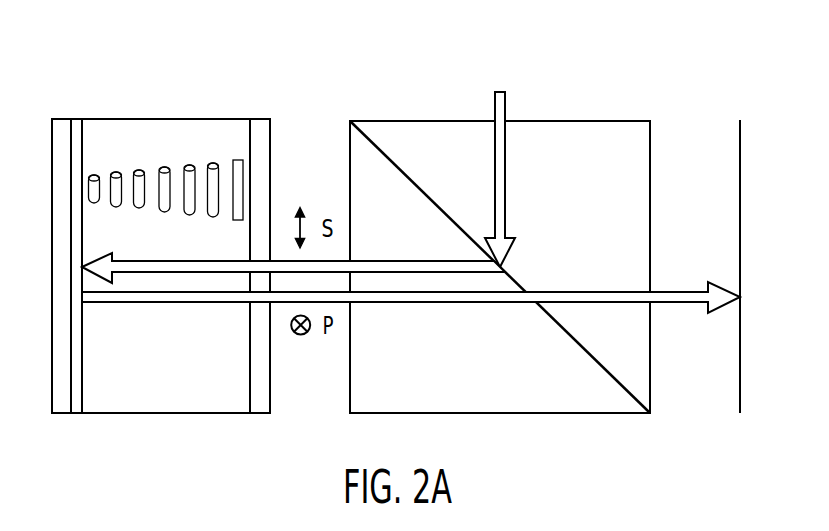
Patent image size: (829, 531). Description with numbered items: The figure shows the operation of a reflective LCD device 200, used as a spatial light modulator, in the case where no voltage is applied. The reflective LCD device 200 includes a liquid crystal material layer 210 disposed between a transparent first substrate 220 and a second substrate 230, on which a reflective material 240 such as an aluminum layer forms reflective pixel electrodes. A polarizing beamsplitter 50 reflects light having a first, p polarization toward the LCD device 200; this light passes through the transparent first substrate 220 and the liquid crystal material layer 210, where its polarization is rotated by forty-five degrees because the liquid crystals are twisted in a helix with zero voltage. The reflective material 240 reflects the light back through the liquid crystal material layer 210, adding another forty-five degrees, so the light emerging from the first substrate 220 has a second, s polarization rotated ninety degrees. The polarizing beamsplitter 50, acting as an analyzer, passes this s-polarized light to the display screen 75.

The reflective LCD device 200 is at (160, 70).
The second substrate 230 is at (63, 118).
The reflective material 240 is at (77, 118).
The liquid crystal material layer 210 is at (213, 118).
The first substrate 220 is at (264, 118).
The polarizing beamsplitter 50 is at (452, 92).
The display screen 75 is at (740, 112).